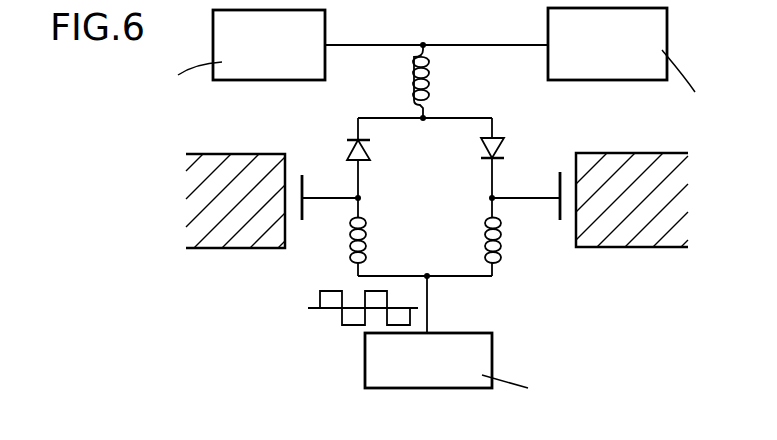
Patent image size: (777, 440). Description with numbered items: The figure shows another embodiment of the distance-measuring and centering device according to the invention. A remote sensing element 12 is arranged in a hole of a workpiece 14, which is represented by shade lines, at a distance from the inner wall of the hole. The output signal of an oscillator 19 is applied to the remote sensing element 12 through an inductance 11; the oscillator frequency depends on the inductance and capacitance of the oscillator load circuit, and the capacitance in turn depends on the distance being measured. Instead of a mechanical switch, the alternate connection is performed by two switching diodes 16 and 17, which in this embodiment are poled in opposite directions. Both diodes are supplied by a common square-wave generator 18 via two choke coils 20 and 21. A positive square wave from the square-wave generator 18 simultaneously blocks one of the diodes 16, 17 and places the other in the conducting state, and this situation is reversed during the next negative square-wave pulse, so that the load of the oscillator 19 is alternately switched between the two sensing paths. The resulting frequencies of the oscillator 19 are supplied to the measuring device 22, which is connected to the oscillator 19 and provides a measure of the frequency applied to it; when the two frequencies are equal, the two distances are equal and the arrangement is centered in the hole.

The inductance 11 is at (432, 82).
The remote sensing element 12 is at (305, 222).
The workpiece 14 is at (230, 198).
The switching diode 16 is at (346, 160).
The switching diode 17 is at (502, 150).
The square-wave generator 18 is at (467, 342).
The oscillator 19 is at (248, 47).
The choke coil 20 is at (368, 237).
The choke coil 21 is at (485, 237).
The measuring device 22 is at (587, 45).